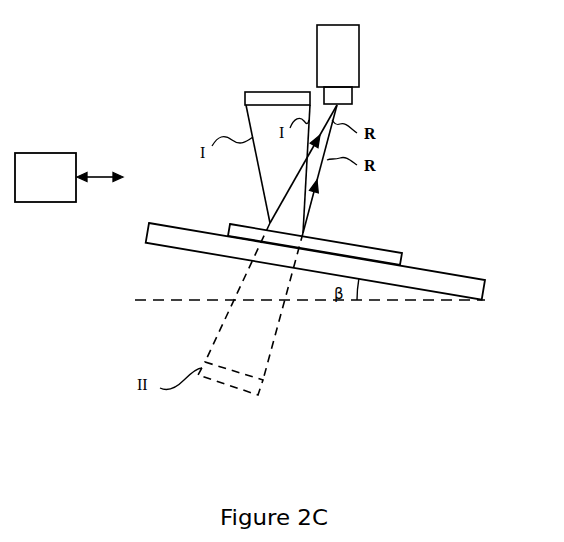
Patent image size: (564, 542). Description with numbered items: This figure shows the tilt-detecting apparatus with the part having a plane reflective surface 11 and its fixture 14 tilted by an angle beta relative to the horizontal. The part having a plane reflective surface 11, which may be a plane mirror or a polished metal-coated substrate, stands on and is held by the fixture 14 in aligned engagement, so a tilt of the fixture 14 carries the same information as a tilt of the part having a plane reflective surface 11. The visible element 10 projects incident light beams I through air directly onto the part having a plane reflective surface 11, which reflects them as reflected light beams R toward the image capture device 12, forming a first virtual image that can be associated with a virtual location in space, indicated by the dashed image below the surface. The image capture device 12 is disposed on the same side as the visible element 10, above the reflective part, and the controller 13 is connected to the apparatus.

The visible element 10 is at (248, 93).
The part having a plane reflective surface 11 is at (387, 257).
The image capture device 12 is at (352, 62).
The controller 13 is at (69, 177).
The fixture 14 is at (475, 290).